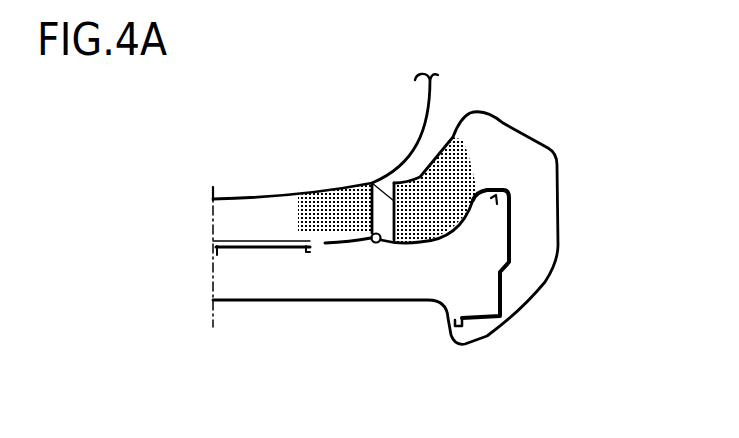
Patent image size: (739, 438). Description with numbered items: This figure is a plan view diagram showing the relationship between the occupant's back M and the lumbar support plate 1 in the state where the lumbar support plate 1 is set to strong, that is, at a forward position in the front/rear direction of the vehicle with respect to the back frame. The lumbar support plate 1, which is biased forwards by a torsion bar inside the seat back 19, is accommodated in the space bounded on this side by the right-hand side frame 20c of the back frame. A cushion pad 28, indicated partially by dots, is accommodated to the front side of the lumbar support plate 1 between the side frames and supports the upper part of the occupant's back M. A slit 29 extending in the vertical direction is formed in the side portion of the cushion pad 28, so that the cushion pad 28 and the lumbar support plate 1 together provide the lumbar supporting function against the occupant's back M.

The lumbar support plate 1 is at (252, 248).
The seat back 19 is at (552, 142).
The right-hand side frame 20c is at (510, 238).
The cushion pad 28 is at (453, 177).
The slit 29 is at (372, 183).
The occupant's back M is at (423, 130).